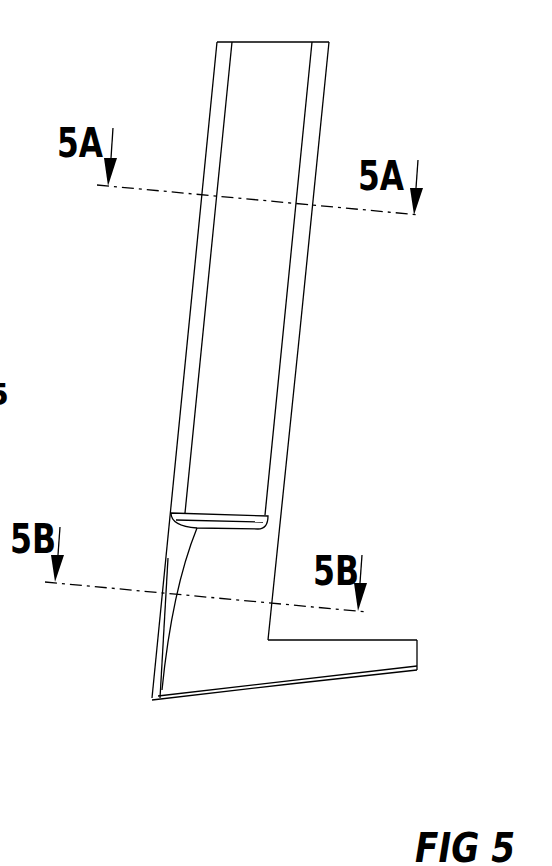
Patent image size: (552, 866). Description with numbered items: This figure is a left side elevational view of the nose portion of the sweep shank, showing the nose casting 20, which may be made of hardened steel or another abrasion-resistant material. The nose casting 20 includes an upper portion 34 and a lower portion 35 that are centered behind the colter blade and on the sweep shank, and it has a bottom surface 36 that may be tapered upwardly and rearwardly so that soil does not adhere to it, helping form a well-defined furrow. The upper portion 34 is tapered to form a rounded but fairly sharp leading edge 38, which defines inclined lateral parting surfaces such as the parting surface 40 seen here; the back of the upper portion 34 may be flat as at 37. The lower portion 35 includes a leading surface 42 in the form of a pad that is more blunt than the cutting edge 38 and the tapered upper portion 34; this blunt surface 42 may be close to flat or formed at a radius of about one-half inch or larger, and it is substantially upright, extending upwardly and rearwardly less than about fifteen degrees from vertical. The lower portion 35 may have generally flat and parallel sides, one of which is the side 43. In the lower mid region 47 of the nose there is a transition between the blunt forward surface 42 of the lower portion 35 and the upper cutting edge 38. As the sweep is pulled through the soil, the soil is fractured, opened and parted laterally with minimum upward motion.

The nose casting 20 is at (352, 379).
The upper portion 34 is at (285, 508).
The lower portion 35 is at (272, 687).
The bottom surface 36 is at (372, 675).
The flat back 37 is at (323, 117).
The leading edge 38 is at (186, 347).
The second inclined lateral parting surface 40 is at (238, 338).
The leading surface 42 is at (152, 661).
The flat side 43 is at (213, 660).
The lower mid region 47 is at (135, 513).